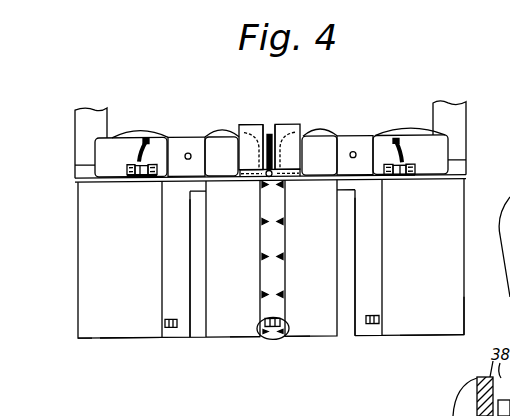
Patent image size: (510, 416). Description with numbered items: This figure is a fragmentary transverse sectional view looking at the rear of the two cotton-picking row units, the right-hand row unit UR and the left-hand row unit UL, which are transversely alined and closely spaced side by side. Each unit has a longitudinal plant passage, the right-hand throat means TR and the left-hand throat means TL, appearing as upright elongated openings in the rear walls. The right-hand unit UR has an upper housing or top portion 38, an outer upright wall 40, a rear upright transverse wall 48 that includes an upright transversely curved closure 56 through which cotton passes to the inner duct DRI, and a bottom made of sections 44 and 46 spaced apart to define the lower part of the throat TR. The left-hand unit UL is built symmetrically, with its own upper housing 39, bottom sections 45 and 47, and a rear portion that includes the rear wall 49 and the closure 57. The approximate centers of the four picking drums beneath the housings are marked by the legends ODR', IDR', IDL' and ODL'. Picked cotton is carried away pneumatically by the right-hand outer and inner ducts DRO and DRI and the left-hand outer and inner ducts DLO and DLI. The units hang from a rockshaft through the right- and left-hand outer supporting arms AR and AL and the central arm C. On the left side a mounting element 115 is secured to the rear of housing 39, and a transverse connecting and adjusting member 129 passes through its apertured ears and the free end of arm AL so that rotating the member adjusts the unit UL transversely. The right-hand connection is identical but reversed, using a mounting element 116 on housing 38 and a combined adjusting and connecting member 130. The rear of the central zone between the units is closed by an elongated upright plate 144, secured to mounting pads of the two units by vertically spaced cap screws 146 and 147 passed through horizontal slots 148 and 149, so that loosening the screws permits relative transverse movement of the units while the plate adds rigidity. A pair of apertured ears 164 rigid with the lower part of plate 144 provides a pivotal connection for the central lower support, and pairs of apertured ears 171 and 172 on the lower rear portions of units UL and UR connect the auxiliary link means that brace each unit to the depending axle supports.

The upper or top housing 39 is at (182, 143).
The top portion of upper housing 38 is at (348, 143).
The transverse connecting and adjusting member 129 is at (126, 170).
The mounting element 115 is at (133, 174).
The mounting element 116 is at (404, 172).
The combined adjusting and connecting member 130 is at (414, 168).
The elongated upright plate 144 is at (278, 207).
The cap screws 147 is at (265, 258).
The cap screws 146 is at (281, 258).
The slots 149 is at (266, 298).
The slots 148 is at (284, 298).
The rear wall portion 49 is at (78, 295).
The bottom portion section 45 is at (102, 340).
The apertured ears 171 is at (173, 329).
The bottom portion section 47 is at (233, 339).
The rear portion closure 57 is at (249, 334).
The apertured ears 164 is at (287, 340).
The bottom portion section 46 is at (305, 331).
The upright transversely curved closure 56 is at (302, 331).
The apertured ears 172 is at (379, 319).
The upright wall 40 is at (462, 242).
The upright transverse wall 48 is at (462, 319).
The bottom portion section 44 is at (432, 338).
The outer duct DLO is at (84, 110).
The left-hand outer supporting arm AL is at (142, 147).
The outer drum location legend ODL' is at (137, 139).
The inner drum location legend IDL' is at (218, 138).
The inner duct DLI is at (247, 126).
The central arm C is at (268, 134).
The inner duct DRI is at (288, 126).
The inner drum location legend IDR' is at (324, 138).
The outer drum location legend ODR' is at (410, 138).
The right-hand outer supporting arm AR is at (398, 146).
The outer duct DRO is at (464, 108).
The left-hand row unit UL is at (132, 337).
The left-hand throat or passage means TL is at (200, 334).
The right-hand throat or passage means TR is at (348, 332).
The right-hand row unit UR is at (415, 334).